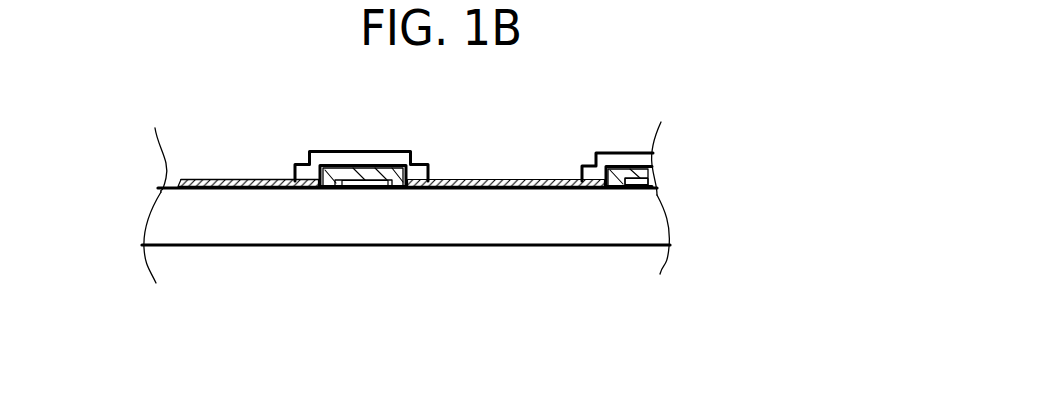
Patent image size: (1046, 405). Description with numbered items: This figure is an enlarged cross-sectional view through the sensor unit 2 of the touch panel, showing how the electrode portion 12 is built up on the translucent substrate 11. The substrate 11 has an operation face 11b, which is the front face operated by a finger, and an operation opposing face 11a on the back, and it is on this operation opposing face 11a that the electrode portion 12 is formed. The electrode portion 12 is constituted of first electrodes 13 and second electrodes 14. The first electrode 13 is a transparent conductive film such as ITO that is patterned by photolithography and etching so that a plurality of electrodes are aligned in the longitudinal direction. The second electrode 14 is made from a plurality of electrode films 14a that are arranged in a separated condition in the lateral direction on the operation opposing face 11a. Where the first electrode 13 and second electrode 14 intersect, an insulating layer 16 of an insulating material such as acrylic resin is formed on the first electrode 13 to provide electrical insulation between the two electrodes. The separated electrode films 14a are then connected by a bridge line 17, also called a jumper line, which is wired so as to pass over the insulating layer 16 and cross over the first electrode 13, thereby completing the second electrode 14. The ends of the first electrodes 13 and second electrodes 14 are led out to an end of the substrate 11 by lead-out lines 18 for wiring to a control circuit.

The sensor unit 2 is at (651, 114).
The substrate 11 is at (430, 220).
The operation opposing face 11a is at (175, 186).
The operation face 11b is at (200, 247).
The electrode portion 12 is at (447, 102).
The first electrode 13 is at (377, 181).
The second electrode 14 is at (507, 179).
The electrode film 14a is at (274, 179).
The insulating layer 16 is at (333, 187).
The bridge line 17 is at (368, 151).
The lead-out line 18 is at (206, 179).